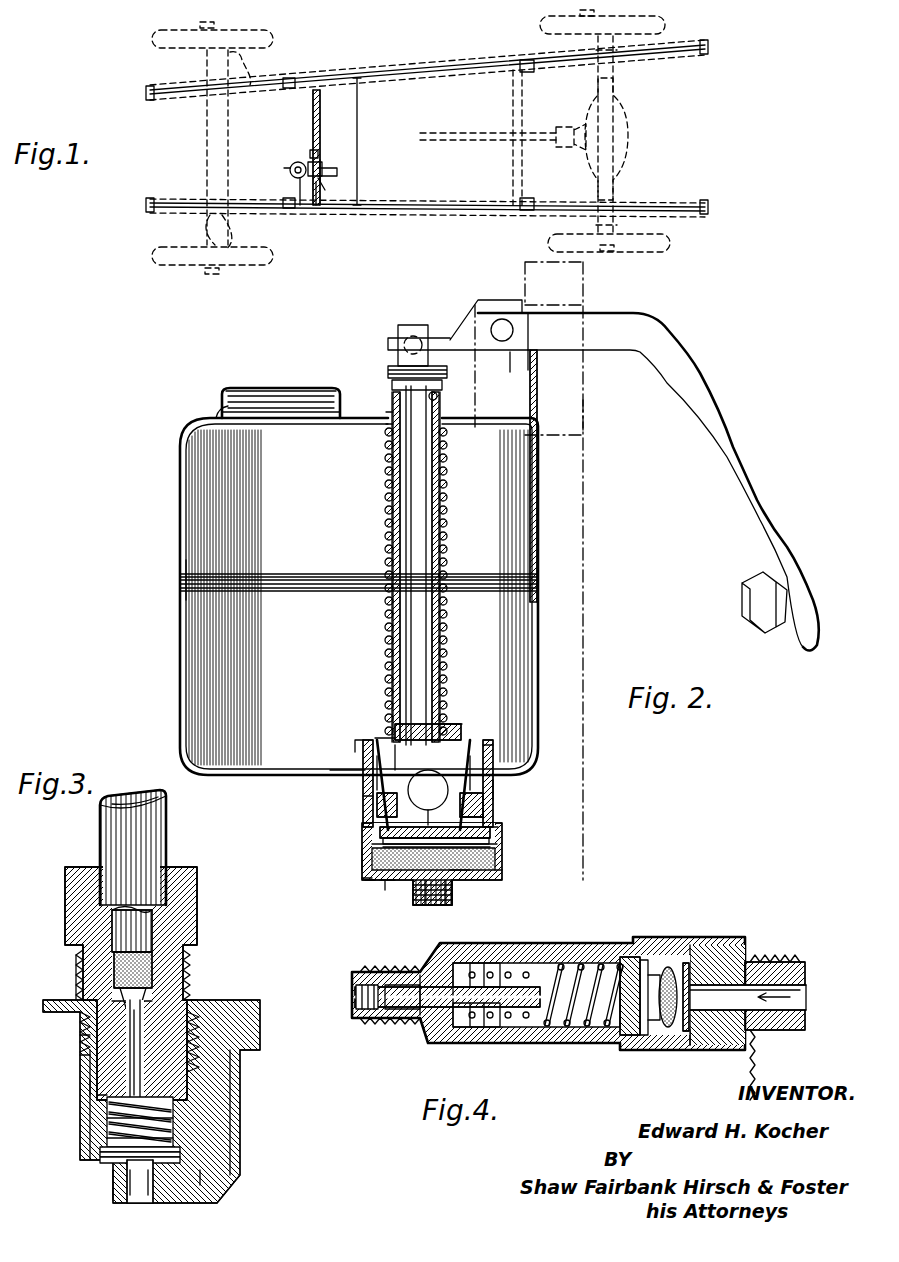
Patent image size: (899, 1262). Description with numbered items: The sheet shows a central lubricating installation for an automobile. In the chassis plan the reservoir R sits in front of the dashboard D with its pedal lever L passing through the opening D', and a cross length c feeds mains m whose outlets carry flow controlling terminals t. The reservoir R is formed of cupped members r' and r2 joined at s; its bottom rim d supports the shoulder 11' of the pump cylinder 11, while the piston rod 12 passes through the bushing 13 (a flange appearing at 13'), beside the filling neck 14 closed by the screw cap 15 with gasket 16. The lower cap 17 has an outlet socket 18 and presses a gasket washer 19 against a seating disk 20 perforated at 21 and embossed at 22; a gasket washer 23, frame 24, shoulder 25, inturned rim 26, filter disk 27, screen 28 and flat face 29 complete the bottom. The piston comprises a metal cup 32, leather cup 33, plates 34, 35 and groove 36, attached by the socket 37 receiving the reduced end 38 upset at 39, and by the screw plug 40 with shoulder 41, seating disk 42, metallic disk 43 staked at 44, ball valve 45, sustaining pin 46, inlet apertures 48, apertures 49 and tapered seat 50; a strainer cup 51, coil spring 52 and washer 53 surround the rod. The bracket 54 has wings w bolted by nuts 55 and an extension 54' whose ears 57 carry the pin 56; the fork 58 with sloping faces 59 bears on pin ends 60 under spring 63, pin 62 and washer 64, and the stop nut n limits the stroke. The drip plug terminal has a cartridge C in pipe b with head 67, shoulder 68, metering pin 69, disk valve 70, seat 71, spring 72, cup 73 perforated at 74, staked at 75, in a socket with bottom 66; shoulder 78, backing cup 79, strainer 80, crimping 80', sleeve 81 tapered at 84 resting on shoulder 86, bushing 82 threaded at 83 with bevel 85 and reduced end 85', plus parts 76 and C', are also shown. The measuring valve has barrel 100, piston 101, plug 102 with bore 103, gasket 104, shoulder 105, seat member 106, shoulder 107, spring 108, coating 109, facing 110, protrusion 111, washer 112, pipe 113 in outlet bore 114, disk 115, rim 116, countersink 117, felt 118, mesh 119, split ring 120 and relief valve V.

In FIG. 1, the flow controlling terminal t is at (148, 92).
In FIG. 1, the main m is at (420, 70).
In FIG. 1, the dashboard D is at (329, 147).
In FIG. 1, the cross length c is at (359, 114).
In FIG. 1, the ears 57 is at (312, 152).
In FIG. 2, the ears 57 is at (510, 362).
In FIG. 1, the wings w is at (321, 160).
In FIG. 2, the wings w is at (537, 512).
In FIG. 1, the reservoir R is at (295, 165).
In FIG. 1, the piston rod 12 is at (300, 166).
In FIG. 2, the piston rod 12 is at (406, 550).
In FIG. 1, the opening D' is at (333, 157).
In FIG. 2, the opening D' is at (605, 415).
In FIG. 1, the pedal lever L is at (338, 172).
In FIG. 2, the pedal lever L is at (728, 456).
In FIG. 1, the screw cap 15 is at (290, 168).
In FIG. 2, the screw cap 15 is at (222, 394).
In FIG. 1, the fork 58 is at (300, 181).
In FIG. 2, the fork 58 is at (470, 342).
In FIG. 1, the supporting bracket 54 is at (358, 181).
In FIG. 2, the supporting bracket 54 is at (549, 571).
In FIG. 1, the bolts and nuts 55 is at (318, 184).
In FIG. 2, the pin 56 is at (502, 320).
In FIG. 2, the protruding ends of loose pin 60 is at (413, 336).
In FIG. 2, the sloping upper faces 59 is at (400, 358).
In FIG. 2, the coil spring 63 is at (394, 368).
In FIG. 2, the pin 62 is at (392, 390).
In FIG. 2, the washer 64 is at (438, 396).
In FIG. 2, the bushing 13 is at (402, 567).
In FIG. 2, the cylinder flange 13' is at (366, 443).
In FIG. 2, the gasket 16 is at (290, 392).
In FIG. 2, the filling neck 14 is at (216, 416).
In FIG. 2, the coil spring 52 is at (389, 484).
In FIG. 2, the cupped member r2 is at (181, 548).
In FIG. 2, the joint s is at (182, 595).
In FIG. 2, the cupped member r' is at (337, 596).
In FIG. 2, the upward extension 54' is at (579, 373).
In FIG. 2, the stop nut n is at (758, 634).
In FIG. 2, the radial inlet apertures 48 is at (378, 740).
In FIG. 2, the metal washer 53 is at (400, 724).
In FIG. 2, the reduced end 38 is at (458, 720).
In FIG. 2, the spherical check valve 45 is at (462, 740).
In FIG. 2, the socket 37 is at (493, 742).
In FIG. 2, the screw plug 40 is at (380, 745).
In FIG. 2, the tapered seat 50 is at (395, 745).
In FIG. 2, the shoulder 11' is at (329, 731).
In FIG. 2, the rim d is at (360, 756).
In FIG. 2, the upset extremity 39 is at (430, 776).
In FIG. 2, the metallic plate 34 is at (493, 790).
In FIG. 2, the strainer cup 51 is at (376, 776).
In FIG. 2, the metal cup 32 is at (368, 798).
In FIG. 2, the circular groove 36 is at (483, 802).
In FIG. 2, the leather cup 33 is at (377, 806).
In FIG. 2, the pump cylinder 11 is at (385, 785).
In FIG. 2, the metallic plate 35 is at (470, 818).
In FIG. 2, the shoulder 41 is at (380, 831).
In FIG. 2, the radial apertures 49 is at (493, 831).
In FIG. 2, the sustaining pin 46 is at (383, 840).
In FIG. 2, the gasket washer 19 is at (497, 844).
In FIG. 2, the metallic disk 43 is at (380, 848).
In FIG. 2, the sheet metal frame 24 is at (497, 860).
In FIG. 2, the gasket washer 23 is at (368, 858).
In FIG. 2, the cap 17 is at (502, 870).
In FIG. 2, the inturned rim 26 is at (368, 880).
In FIG. 2, the filter disk 27 is at (385, 882).
In FIG. 2, the staking 44 is at (460, 872).
In FIG. 2, the shoulder 25 is at (502, 878).
In FIG. 2, the plunger seating disk 20 is at (372, 885).
In FIG. 2, the flat inner face 29 is at (390, 882).
In FIG. 2, the outlet socket 18 is at (418, 905).
In FIG. 2, the wire mesh screen 28 is at (430, 908).
In FIG. 2, the central perforation 21 is at (449, 885).
In FIG. 2, the seating disk 42 is at (452, 882).
In FIG. 2, the upward embossment 22 is at (448, 906).
In FIG. 3, the pipe b is at (167, 840).
In FIG. 3, the strainer 80 is at (177, 923).
In FIG. 3, the crimping 80' is at (181, 926).
In FIG. 3, the wire mesh backing cup 79 is at (152, 968).
In FIG. 3, the shoulder 78 is at (150, 992).
In FIG. 3, the metering pin 69 is at (170, 1010).
In FIG. 3, the thread 83 is at (200, 1010).
In FIG. 3, the bushing 82 is at (80, 962).
In FIG. 3, the cartridge C is at (140, 1101).
In FIG. 3, the reduced inner end 85' is at (55, 1037).
In FIG. 3, the beveled edge 85 is at (55, 1059).
In FIG. 3, the taper 84 is at (142, 1052).
In FIG. 3, the coupling flange C' is at (56, 1083).
In FIG. 3, the shoulder 68 is at (188, 1085).
In FIG. 3, the chamber wall 76 is at (100, 1100).
In FIG. 3, the enlarged head 67 is at (172, 1112).
In FIG. 3, the seat 71 is at (110, 1122).
In FIG. 3, the compression coupling sleeve 81 is at (110, 1140).
In FIG. 3, the peripheral shoulder 86 is at (178, 1146).
In FIG. 3, the disk valve 70 is at (110, 1160).
In FIG. 3, the spring 72 is at (178, 1152).
In FIG. 3, the staking 75 is at (202, 1178).
In FIG. 3, the tapered bottom 66 is at (112, 1175).
In FIG. 3, the metal cup 73 is at (130, 1172).
In FIG. 3, the central perforation 74 is at (146, 1172).
In FIG. 4, the outlet bore 114 is at (362, 998).
In FIG. 4, the relief valve V is at (390, 1022).
In FIG. 4, the shoulder 107 is at (424, 1040).
In FIG. 4, the vellumoid disk 115 is at (450, 1043).
In FIG. 4, the rounded rim 116 is at (490, 1043).
In FIG. 4, the cup-shaped piston 101 is at (545, 1043).
In FIG. 4, the oiled silk facing 110 is at (600, 1043).
In FIG. 4, the axial protrusion 111 is at (645, 1050).
In FIG. 4, the seat member 106 is at (660, 1050).
In FIG. 4, the split ring 120 is at (695, 1050).
In FIG. 4, the plug 102 is at (752, 1032).
In FIG. 4, the axial bore 103 is at (795, 992).
In FIG. 4, the felt disk 118 is at (745, 962).
In FIG. 4, the gasket 104 is at (727, 937).
In FIG. 4, the countersink 117 is at (686, 963).
In FIG. 4, the shoulder 105 is at (640, 943).
In FIG. 4, the wire mesh 119 is at (676, 975).
In FIG. 4, the vellumoid coating 109 is at (630, 956).
In FIG. 4, the washer 112 is at (644, 960).
In FIG. 4, the barrel 100 is at (604, 950).
In FIG. 4, the coil spring 108 is at (520, 963).
In FIG. 4, the pipe 113 is at (505, 962).